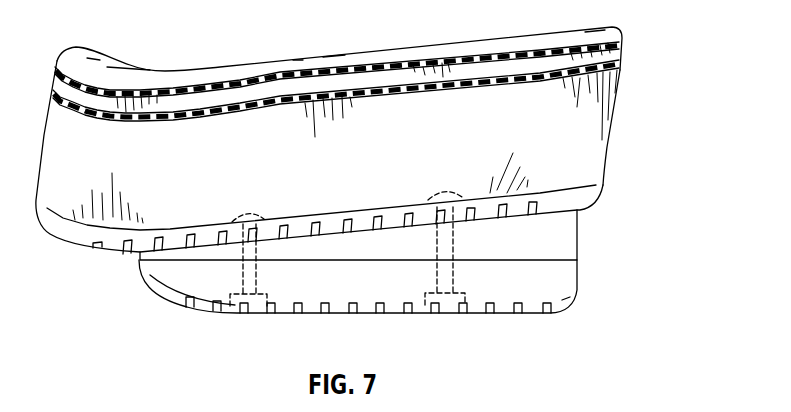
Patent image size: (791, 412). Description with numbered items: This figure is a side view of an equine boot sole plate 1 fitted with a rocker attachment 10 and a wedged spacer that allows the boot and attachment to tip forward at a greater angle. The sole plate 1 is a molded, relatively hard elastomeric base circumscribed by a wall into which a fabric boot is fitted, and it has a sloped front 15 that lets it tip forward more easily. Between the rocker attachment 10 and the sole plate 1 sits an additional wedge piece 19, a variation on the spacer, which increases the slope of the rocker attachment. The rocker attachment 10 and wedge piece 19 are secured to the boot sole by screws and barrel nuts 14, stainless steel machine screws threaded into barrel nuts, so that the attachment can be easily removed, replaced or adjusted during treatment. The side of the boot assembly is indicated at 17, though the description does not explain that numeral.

The molded equine boot sole plate 1 is at (628, 103).
The rocker attachment 10 is at (569, 286).
The screws and barrel nuts 14 is at (247, 214).
The sloped front 15 is at (112, 250).
The upper 17 is at (607, 194).
The wedge piece 19 is at (569, 231).